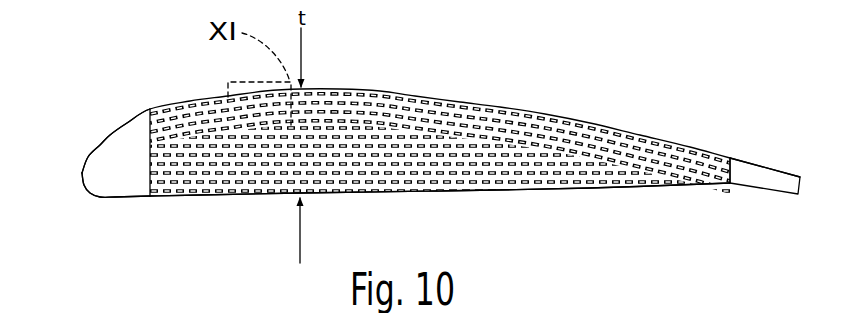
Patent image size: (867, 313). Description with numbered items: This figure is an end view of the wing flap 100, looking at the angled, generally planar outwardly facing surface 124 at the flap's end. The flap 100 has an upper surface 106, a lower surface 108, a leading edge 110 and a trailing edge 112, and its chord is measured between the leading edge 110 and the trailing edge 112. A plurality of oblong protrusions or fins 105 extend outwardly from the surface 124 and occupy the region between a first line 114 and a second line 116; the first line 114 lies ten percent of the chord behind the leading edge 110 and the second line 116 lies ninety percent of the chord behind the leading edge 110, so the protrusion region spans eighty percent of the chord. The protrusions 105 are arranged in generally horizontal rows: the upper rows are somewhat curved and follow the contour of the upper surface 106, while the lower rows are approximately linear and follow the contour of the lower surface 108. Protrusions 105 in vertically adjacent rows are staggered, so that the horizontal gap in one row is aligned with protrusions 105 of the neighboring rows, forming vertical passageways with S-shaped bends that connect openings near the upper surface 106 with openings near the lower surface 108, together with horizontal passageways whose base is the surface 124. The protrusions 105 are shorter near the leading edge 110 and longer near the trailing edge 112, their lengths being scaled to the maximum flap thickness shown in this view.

The wing flap 100 is at (502, 102).
The protrusions 105 is at (348, 100).
The upper surface 106 is at (415, 98).
The lower surface 108 is at (437, 192).
The leading edge 110 is at (80, 182).
The trailing edge 112 is at (803, 187).
The first line 114 is at (152, 105).
The second line 116 is at (730, 154).
The outwardly facing surface 124 is at (148, 197).